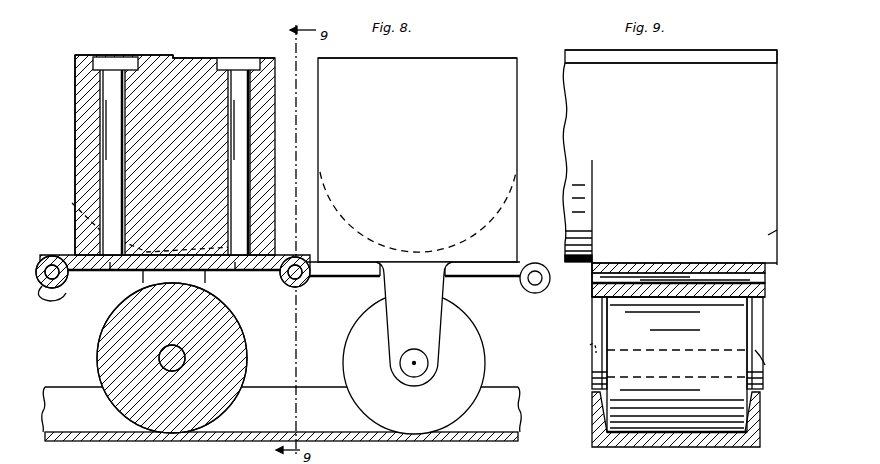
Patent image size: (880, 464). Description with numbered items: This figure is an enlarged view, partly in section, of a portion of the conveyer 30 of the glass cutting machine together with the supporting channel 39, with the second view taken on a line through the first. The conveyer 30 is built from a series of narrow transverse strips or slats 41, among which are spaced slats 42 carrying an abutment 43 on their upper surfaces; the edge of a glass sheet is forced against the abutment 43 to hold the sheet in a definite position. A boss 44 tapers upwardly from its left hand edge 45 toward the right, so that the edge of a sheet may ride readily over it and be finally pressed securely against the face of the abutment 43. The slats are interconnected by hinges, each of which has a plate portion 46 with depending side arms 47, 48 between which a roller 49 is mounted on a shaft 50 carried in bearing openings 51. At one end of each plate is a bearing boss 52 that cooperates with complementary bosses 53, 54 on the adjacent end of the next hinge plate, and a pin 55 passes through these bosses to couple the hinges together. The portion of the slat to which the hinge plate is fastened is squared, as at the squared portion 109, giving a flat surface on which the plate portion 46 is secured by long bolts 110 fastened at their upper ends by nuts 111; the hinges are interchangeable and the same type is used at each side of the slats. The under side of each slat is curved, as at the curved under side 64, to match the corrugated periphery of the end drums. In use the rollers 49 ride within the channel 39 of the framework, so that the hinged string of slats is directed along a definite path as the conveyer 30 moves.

In FIG. 8, the conveyer 30 is at (514, 60).
In FIG. 9, the conveyer 30 is at (768, 53).
In FIG. 8, the channel 39 is at (520, 440).
In FIG. 9, the channel 39 is at (592, 418).
In FIG. 8, the slat 41 is at (372, 56).
In FIG. 8, the spaced slat 42 is at (190, 62).
In FIG. 9, the spaced slat 42 is at (572, 92).
In FIG. 8, the abutment 43 is at (188, 34).
In FIG. 9, the abutment 43 is at (587, 58).
In FIG. 8, the boss 44 is at (170, 54).
In FIG. 9, the boss 44 is at (600, 50).
In FIG. 8, the left hand edge 45 is at (75, 55).
In FIG. 8, the plate portion 46 is at (145, 275).
In FIG. 9, the plate portion 46 is at (705, 285).
In FIG. 8, the side arm 47 is at (198, 283).
In FIG. 9, the side arm 47 is at (592, 318).
In FIG. 8, the side arm 48 is at (390, 330).
In FIG. 9, the side arm 48 is at (763, 318).
In FIG. 8, the roller 49 is at (246, 356).
In FIG. 9, the roller 49 is at (735, 340).
In FIG. 8, the shaft 50 is at (158, 361).
In FIG. 9, the shaft 50 is at (694, 350).
In FIG. 8, the bearing opening 51 is at (422, 359).
In FIG. 9, the bearing opening 51 is at (673, 357).
In FIG. 8, the bearing boss 52 is at (54, 298).
In FIG. 9, the bearing boss 52 is at (660, 285).
In FIG. 8, the complementary boss 53 is at (283, 284).
In FIG. 9, the complementary boss 53 is at (610, 285).
In FIG. 9, the complementary boss 54 is at (755, 285).
In FIG. 8, the pin 55 is at (52, 257).
In FIG. 9, the pin 55 is at (767, 280).
In FIG. 8, the curved under side 64 is at (72, 205).
In FIG. 9, the curved under side 64 is at (570, 280).
In FIG. 8, the squared portion 109 is at (508, 224).
In FIG. 9, the squared portion 109 is at (768, 234).
In FIG. 8, the long bolt 110 is at (105, 136).
In FIG. 8, the nut 111 is at (113, 52).